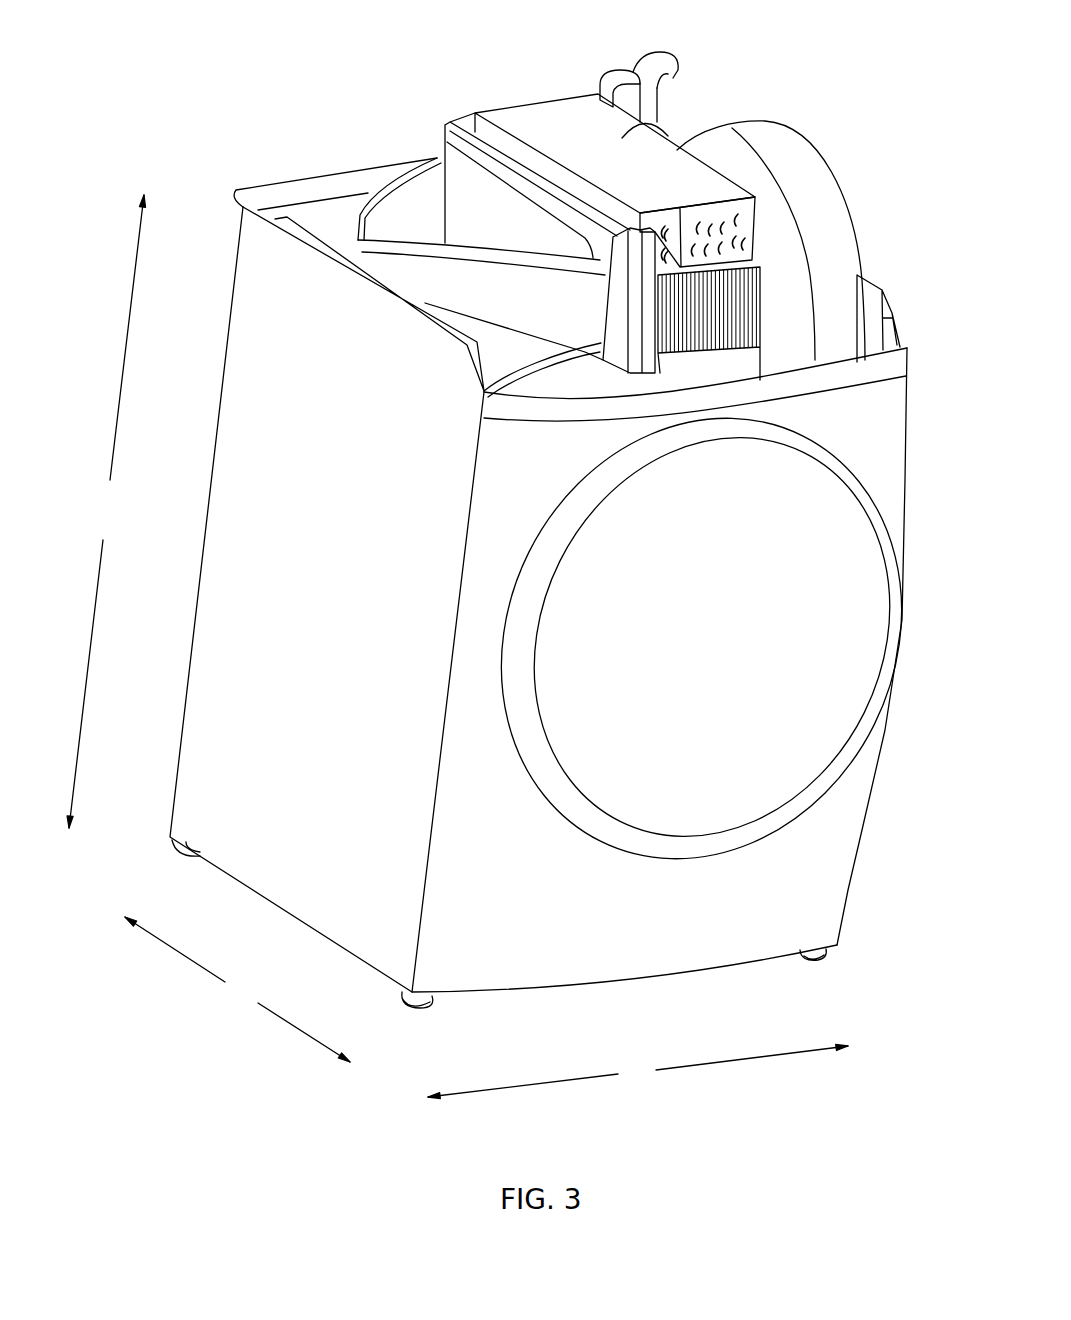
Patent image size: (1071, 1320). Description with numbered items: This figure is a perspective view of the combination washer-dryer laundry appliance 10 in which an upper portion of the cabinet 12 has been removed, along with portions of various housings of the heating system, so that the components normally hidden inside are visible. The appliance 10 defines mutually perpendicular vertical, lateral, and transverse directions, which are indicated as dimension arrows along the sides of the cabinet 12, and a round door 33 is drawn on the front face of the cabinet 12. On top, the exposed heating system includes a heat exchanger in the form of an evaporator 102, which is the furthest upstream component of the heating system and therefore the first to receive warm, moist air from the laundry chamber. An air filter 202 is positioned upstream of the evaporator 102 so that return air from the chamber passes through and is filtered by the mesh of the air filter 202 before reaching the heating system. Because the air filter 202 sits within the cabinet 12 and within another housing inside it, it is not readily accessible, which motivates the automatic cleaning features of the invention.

The laundry appliance 10 is at (185, 202).
The cabinet 12 is at (808, 865).
The door 33 is at (820, 672).
The evaporator 102 is at (540, 113).
The air filter 202 is at (472, 197).